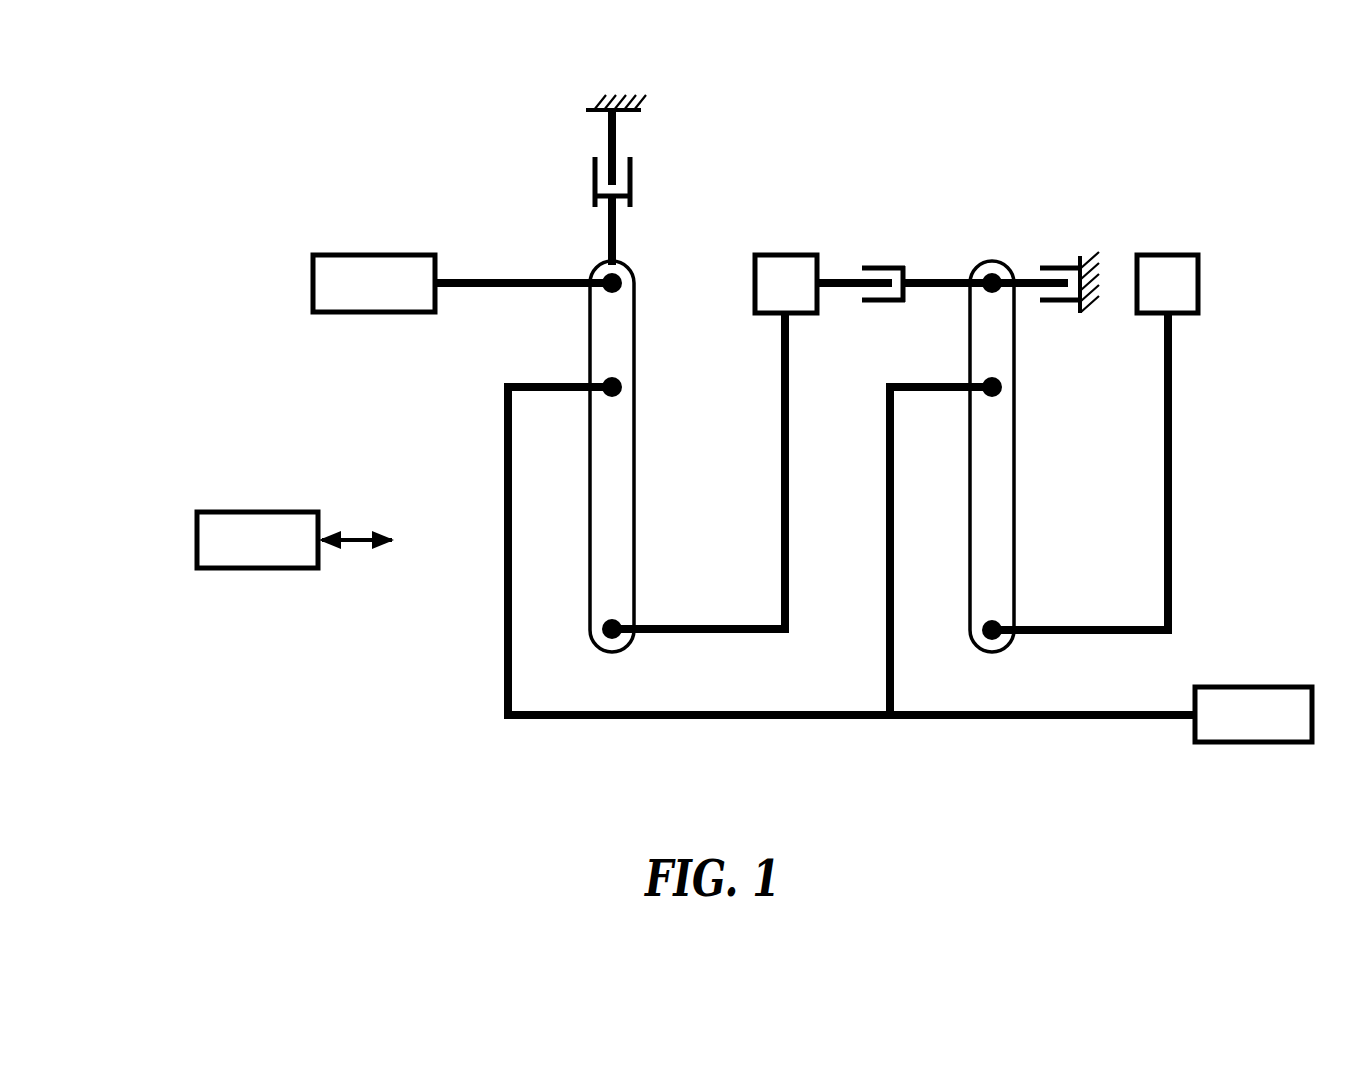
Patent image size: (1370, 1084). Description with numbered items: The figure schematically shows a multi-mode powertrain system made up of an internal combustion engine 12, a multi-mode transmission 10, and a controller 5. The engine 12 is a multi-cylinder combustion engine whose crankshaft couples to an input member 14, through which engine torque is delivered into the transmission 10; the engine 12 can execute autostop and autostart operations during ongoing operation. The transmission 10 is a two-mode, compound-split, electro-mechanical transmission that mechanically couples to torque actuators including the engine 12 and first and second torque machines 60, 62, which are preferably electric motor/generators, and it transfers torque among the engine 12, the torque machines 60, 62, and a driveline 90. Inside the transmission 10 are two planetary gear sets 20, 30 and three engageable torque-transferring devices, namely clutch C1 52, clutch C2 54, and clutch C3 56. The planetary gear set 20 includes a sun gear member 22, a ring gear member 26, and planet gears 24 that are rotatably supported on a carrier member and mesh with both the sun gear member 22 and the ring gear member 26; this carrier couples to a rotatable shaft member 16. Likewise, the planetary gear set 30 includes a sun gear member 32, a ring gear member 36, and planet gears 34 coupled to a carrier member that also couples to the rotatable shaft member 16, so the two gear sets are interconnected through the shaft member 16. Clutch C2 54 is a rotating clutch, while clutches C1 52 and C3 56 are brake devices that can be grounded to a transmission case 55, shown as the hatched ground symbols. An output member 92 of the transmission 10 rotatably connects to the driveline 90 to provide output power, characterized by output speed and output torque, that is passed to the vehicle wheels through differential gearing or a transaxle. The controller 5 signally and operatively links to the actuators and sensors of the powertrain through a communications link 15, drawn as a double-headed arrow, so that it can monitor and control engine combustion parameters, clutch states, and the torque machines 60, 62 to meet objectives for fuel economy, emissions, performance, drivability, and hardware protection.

The controller 5 is at (257, 540).
The multi-mode transmission 10 is at (1197, 470).
The internal combustion engine 12 is at (374, 283).
The input member 14 is at (498, 279).
The communications link 15 is at (351, 538).
The rotatable shaft member 16 is at (662, 719).
The planetary gear set 20 is at (588, 352).
The sun gear member 22 is at (614, 620).
The planet gears 24 is at (634, 386).
The ring gear member 26 is at (637, 283).
The planetary gear set 30 is at (994, 259).
The sun gear member 32 is at (994, 621).
The planet gears 34 is at (1004, 387).
The ring gear member 36 is at (992, 294).
The clutch C1 52 is at (1056, 266).
The clutch C2 54 is at (879, 266).
The transmission case 55 is at (641, 99).
The clutch C3 56 is at (633, 180).
The first torque machine 60 is at (752, 442).
The second torque machine 62 is at (1095, 442).
The driveline 90 is at (1253, 714).
The output member 92 is at (1017, 719).